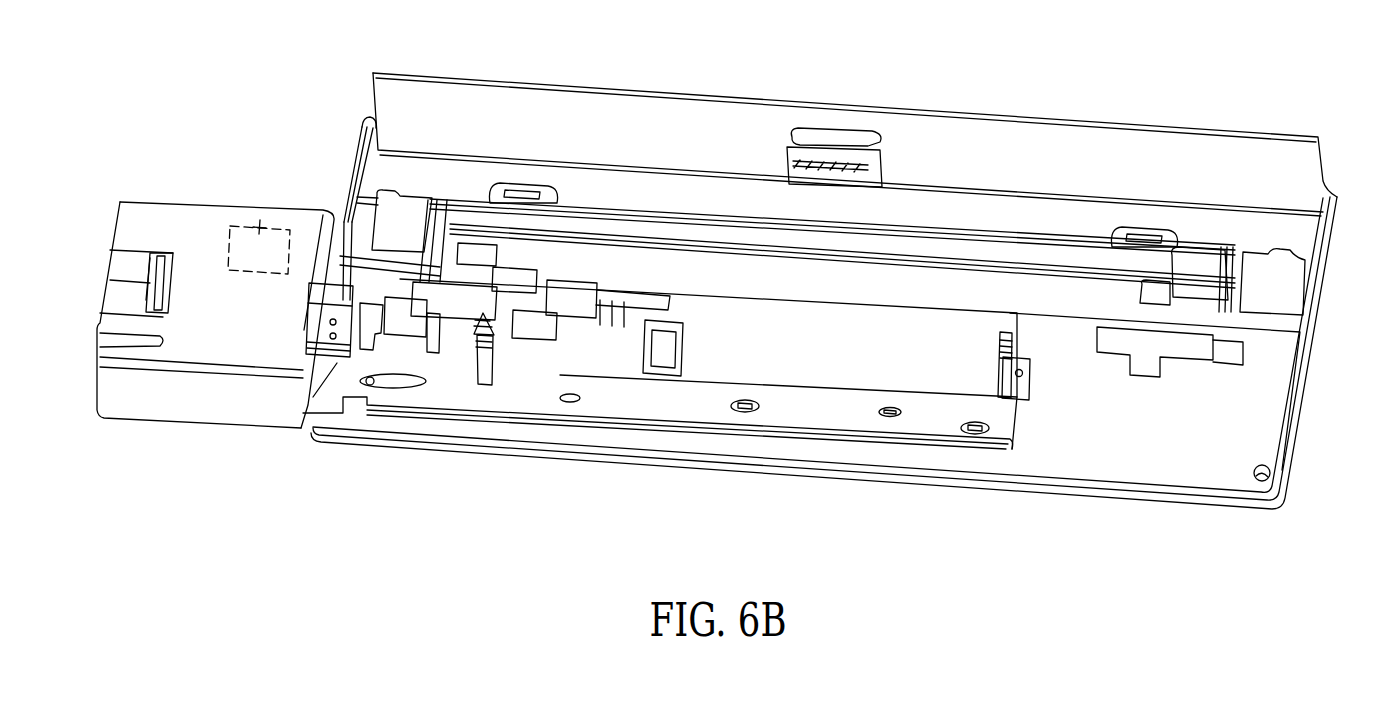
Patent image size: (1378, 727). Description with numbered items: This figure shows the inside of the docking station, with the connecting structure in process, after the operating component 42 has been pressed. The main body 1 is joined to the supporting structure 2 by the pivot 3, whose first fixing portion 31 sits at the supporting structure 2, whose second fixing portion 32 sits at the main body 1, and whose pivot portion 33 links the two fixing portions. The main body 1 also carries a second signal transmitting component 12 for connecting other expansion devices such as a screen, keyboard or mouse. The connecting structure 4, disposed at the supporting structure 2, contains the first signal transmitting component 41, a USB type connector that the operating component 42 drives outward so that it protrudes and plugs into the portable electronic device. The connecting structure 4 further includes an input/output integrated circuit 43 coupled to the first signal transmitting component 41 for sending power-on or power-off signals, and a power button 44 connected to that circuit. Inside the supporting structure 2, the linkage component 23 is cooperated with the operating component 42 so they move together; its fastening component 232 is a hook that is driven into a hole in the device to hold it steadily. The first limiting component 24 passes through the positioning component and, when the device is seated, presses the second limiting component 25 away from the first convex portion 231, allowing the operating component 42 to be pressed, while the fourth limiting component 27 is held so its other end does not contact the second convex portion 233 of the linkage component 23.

The main body 1 is at (1268, 128).
The supporting structure 2 is at (1258, 440).
The pivot 3 is at (388, 183).
The connecting structure 4 is at (205, 215).
The second signal transmitting component 12 is at (840, 160).
The linkage component 23 is at (646, 408).
The first limiting component 24 is at (433, 355).
The second limiting component 25 is at (400, 338).
The fourth limiting component 27 is at (572, 330).
The first fixing portion 31 is at (1160, 363).
The second fixing portion 32 is at (1302, 282).
The pivot portion 33 is at (1146, 294).
The first signal transmitting component 41 is at (320, 330).
The operating component 42 is at (165, 285).
The input/output integrated circuit 43 is at (264, 218).
The power button 44 is at (134, 340).
The first convex portion 231 is at (379, 337).
The fastening component 232 is at (486, 390).
The second convex portion 233 is at (668, 378).